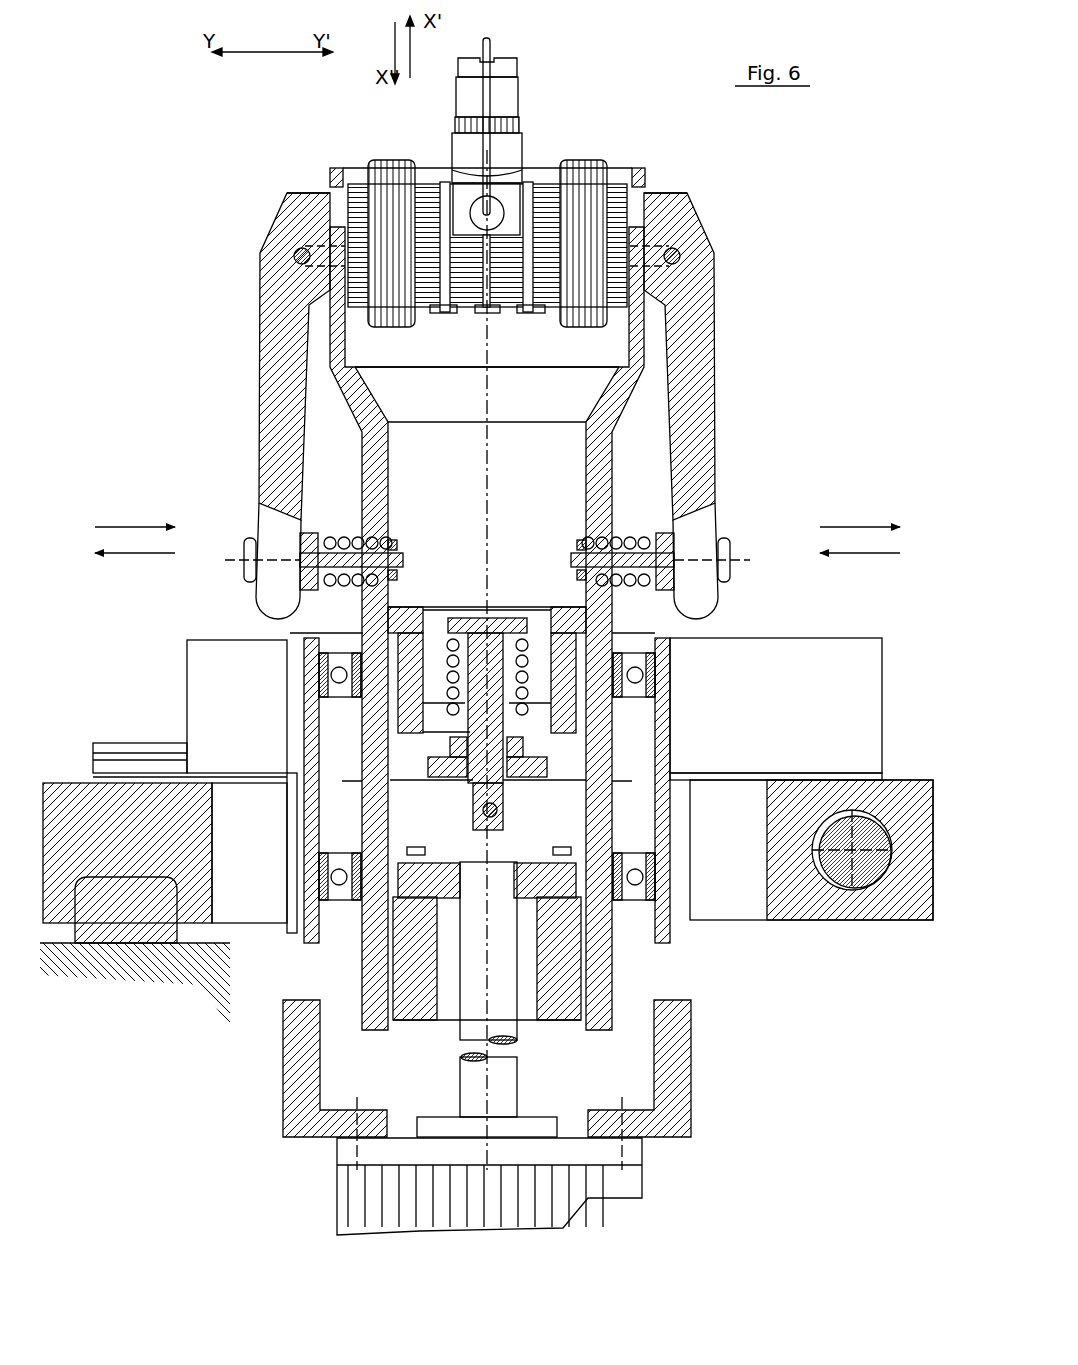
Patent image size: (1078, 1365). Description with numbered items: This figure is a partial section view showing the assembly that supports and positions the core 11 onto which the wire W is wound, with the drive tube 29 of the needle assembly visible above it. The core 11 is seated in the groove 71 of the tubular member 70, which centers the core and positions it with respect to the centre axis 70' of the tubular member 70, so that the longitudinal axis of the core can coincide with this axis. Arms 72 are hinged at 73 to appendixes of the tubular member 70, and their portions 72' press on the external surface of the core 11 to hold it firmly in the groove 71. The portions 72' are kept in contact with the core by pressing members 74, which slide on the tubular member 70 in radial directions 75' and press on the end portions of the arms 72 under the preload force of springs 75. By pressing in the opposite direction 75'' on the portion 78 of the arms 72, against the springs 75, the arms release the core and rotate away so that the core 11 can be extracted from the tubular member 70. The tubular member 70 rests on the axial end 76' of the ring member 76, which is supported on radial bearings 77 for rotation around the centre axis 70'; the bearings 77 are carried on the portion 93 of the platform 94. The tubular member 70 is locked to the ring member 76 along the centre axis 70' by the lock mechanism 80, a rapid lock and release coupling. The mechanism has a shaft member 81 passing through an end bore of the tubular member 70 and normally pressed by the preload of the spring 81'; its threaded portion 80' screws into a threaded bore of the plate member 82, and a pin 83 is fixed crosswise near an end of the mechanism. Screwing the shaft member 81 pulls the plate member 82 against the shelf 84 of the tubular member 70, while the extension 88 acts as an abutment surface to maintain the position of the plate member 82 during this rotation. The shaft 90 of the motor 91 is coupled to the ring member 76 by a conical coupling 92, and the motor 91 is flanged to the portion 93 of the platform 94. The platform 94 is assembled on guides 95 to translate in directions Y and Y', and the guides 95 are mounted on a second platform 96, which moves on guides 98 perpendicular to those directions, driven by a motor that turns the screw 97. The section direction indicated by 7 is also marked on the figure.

The wire W is at (492, 44).
The drive tube 29 is at (512, 96).
The core 11 is at (426, 186).
The tubular member 70 is at (479, 628).
The centre axis 70' is at (516, 660).
The groove 71 is at (605, 328).
The arms 72 is at (482, 406).
The portions of arms 72' is at (491, 164).
The hinge 73 is at (296, 248).
The pressing members 74 is at (398, 552).
The springs 75 is at (487, 557).
The radial directions 75' is at (497, 580).
The opposite direction 75'' is at (497, 501).
The ring member 76 is at (517, 790).
The axial end 76' is at (702, 614).
The radial bearings 77 is at (657, 671).
The portion of arms 78 is at (246, 546).
The lock mechanism 80 is at (431, 809).
The threaded portion of shaft member 80' is at (513, 803).
The shaft member 81 is at (487, 663).
The spring 81' is at (530, 633).
The plate member 82 is at (560, 770).
The pin 83 is at (497, 835).
The shelf 84 is at (423, 732).
The extension 88 is at (415, 758).
The shaft of motor 90 is at (507, 1086).
The motor 91 is at (628, 1181).
The conical coupling 92 is at (437, 1050).
The portion of platform 93 is at (292, 921).
The platform 94 is at (186, 690).
The guides 95 is at (131, 751).
The second platform 96 is at (71, 795).
The screw 97 is at (852, 892).
The guides 98 is at (120, 930).
The section direction 7 is at (352, 788).